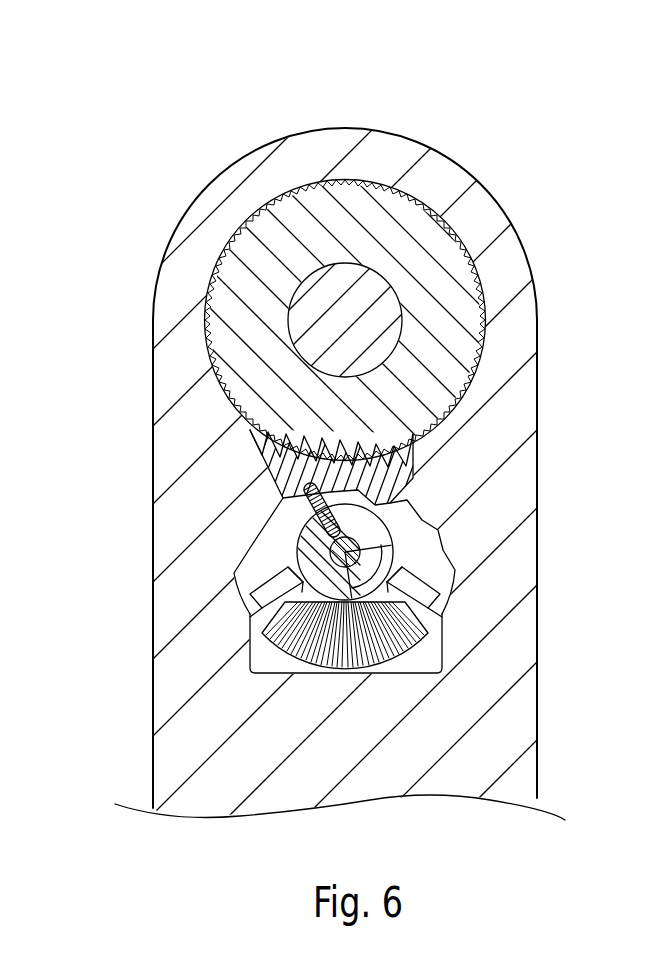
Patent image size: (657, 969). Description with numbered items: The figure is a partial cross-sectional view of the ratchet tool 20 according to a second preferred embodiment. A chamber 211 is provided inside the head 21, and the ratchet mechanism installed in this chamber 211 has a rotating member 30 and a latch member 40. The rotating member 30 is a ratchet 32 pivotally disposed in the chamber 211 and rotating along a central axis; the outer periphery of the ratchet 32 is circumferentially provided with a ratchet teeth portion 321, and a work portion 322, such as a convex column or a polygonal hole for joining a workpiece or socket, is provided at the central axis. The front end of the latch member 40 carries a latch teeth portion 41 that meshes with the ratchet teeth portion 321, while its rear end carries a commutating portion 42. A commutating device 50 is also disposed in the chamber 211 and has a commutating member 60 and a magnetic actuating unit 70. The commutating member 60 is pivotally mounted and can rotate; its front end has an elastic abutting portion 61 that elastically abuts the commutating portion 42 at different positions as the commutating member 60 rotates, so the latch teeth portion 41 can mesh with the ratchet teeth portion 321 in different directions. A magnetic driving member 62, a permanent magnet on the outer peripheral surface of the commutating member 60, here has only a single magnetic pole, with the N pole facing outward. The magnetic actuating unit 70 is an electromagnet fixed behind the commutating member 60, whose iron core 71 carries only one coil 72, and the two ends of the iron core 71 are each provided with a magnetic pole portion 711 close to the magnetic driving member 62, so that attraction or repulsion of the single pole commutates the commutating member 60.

The ratchet tool 20 is at (147, 183).
The head 21 is at (265, 140).
The chamber 211 is at (257, 213).
The rotating member 30 is at (414, 367).
The ratchet 32 is at (415, 237).
The ratchet teeth portion 321 is at (380, 187).
The work portion 322 is at (340, 265).
The latch member 40 is at (341, 421).
The latch teeth portion 41 is at (425, 465).
The commutating portion 42 is at (272, 440).
The commutating device 50 is at (272, 518).
The commutating member 60 is at (341, 530).
The abutting portion 61 is at (290, 515).
The magnetic driving member 62 is at (398, 540).
The magnetic actuating unit 70 is at (342, 727).
The iron core 71 is at (345, 612).
The magnetic pole portion 711 is at (250, 618).
The coil 72 is at (262, 655).